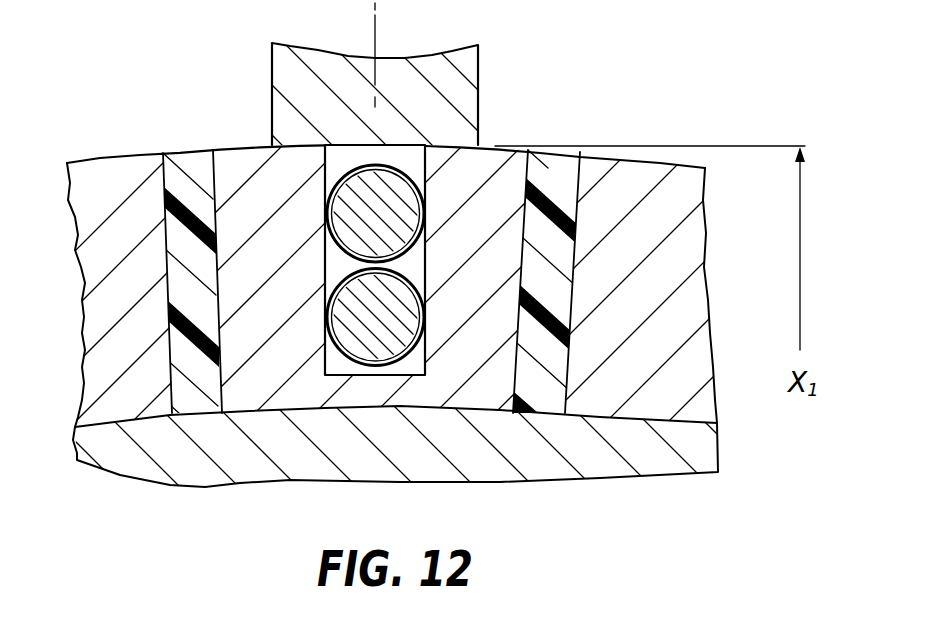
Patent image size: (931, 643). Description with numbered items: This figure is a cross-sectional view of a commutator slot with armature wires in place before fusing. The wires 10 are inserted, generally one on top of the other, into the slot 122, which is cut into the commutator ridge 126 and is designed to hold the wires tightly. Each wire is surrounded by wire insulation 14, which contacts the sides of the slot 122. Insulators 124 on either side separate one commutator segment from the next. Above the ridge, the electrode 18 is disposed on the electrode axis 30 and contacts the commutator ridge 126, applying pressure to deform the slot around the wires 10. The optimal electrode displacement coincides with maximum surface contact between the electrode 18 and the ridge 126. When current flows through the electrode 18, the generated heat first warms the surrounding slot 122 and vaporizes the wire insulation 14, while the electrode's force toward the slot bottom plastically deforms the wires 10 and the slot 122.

The wires 10 is at (384, 189).
The wire insulation 14 is at (325, 200).
The electrode 18 is at (467, 78).
The electrode axis 30 is at (373, 32).
The slot 122 is at (341, 160).
The insulators 124 is at (175, 170).
The commutator ridge 126 is at (530, 130).